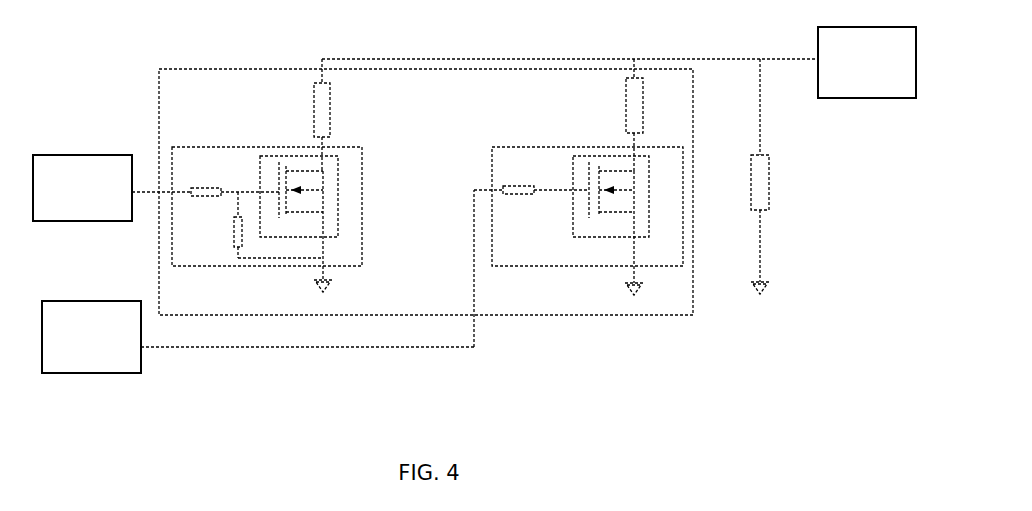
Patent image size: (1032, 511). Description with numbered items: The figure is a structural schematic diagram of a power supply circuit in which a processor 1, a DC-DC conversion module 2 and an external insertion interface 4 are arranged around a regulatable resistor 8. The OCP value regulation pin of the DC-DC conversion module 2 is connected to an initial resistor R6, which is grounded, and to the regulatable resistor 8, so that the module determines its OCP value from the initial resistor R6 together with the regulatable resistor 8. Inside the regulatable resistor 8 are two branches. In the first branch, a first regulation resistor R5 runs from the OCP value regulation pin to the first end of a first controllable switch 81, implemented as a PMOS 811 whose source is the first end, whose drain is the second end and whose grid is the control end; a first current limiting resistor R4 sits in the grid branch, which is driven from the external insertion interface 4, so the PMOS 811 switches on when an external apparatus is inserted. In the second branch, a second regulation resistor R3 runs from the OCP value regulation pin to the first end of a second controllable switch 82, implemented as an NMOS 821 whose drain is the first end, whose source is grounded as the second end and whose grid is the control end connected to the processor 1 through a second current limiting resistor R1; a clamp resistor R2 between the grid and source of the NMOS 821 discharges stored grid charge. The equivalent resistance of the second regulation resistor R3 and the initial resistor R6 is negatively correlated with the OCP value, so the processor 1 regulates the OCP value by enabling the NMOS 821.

The processor 1 is at (98, 155).
The DC-DC conversion module 2 is at (882, 27).
The external insertion interface 4 is at (95, 300).
The regulatable resistor 8 is at (236, 69).
The first controllable switch 81 is at (548, 147).
The PMOS 811 is at (652, 149).
The second controllable switch 82 is at (230, 147).
The NMOS 821 is at (340, 149).
The second current limiting resistor R1 is at (206, 182).
The clamp resistor R2 is at (224, 232).
The second regulation resistor R3 is at (310, 110).
The first current limiting resistor R4 is at (518, 179).
The first regulation resistor R5 is at (621, 105).
The initial resistor R6 is at (746, 182).